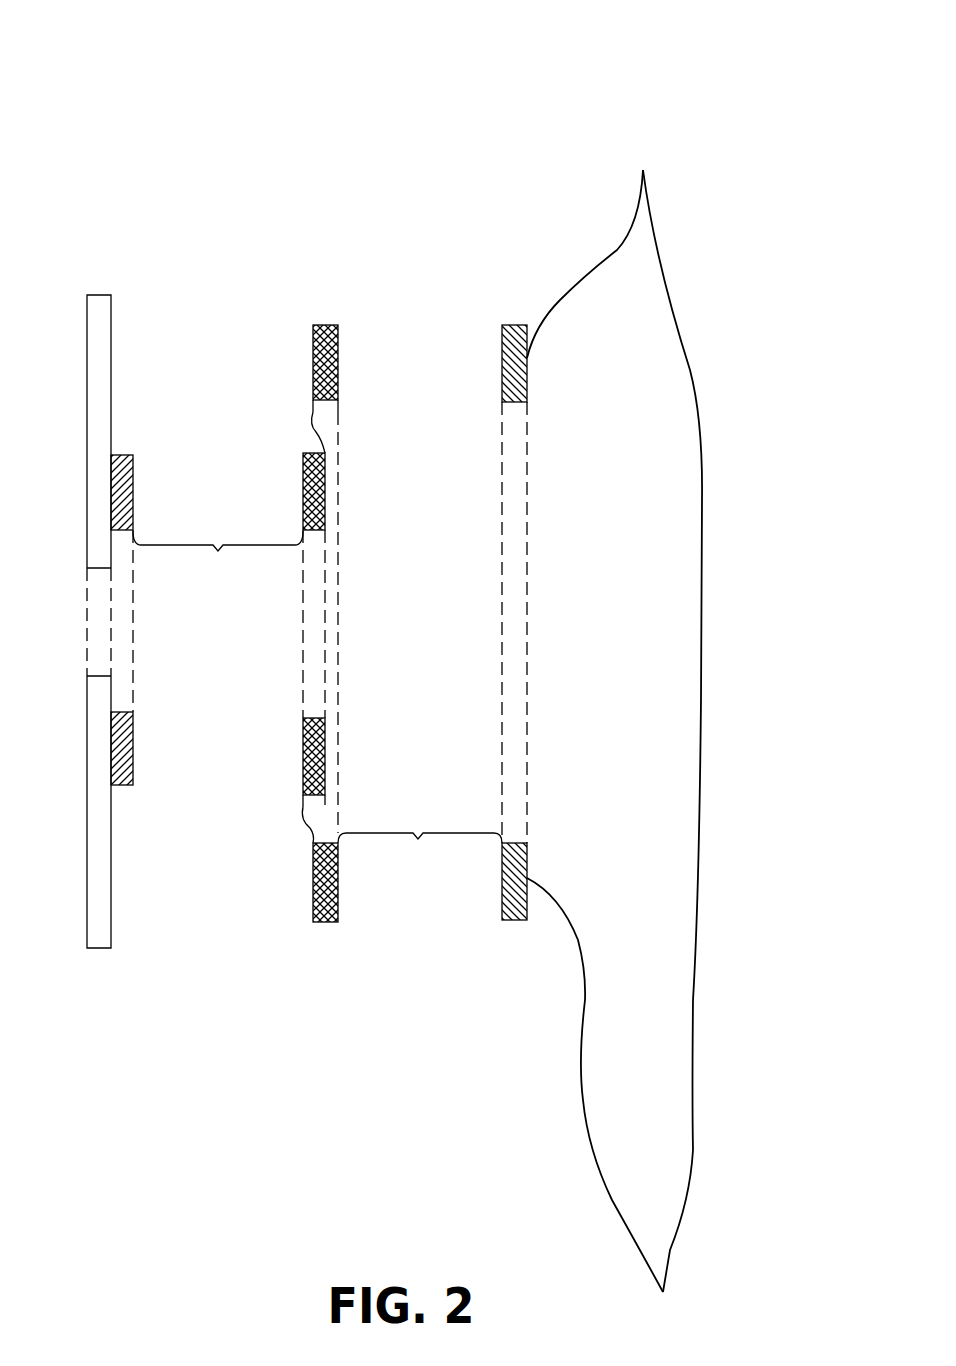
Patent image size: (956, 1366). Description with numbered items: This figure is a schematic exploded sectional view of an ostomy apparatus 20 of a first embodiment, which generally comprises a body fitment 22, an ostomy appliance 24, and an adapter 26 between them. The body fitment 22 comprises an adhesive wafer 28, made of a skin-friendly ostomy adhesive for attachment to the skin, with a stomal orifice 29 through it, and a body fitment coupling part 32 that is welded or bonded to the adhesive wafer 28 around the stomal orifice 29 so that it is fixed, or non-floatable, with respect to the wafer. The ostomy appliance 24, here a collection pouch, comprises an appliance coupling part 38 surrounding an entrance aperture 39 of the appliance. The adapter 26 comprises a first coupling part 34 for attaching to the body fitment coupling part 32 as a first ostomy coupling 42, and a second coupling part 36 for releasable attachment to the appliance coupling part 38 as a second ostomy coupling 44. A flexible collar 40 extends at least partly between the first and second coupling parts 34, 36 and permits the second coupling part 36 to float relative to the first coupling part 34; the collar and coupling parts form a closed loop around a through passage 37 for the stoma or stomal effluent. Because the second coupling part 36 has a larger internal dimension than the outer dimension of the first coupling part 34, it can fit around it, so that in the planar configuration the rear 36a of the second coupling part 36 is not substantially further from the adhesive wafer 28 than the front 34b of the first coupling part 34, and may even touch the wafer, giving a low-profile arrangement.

The ostomy apparatus 20 is at (318, 76).
The body fitment 22 is at (145, 216).
The ostomy appliance 24 is at (568, 216).
The adapter 26 is at (334, 216).
The adhesive wafer 28 is at (102, 322).
The stomal orifice 29 is at (89, 654).
The body fitment coupling part 32 is at (133, 470).
The first coupling part 34 is at (303, 495).
The front of the first coupling part 34b is at (327, 485).
The second coupling part 36 is at (338, 342).
The rear of the second coupling part 36a is at (313, 358).
The through passage 37 is at (318, 630).
The appliance coupling part 38 is at (502, 352).
The entrance aperture 39 is at (520, 458).
The flexible collar 40 is at (320, 440).
The first ostomy coupling 42 is at (218, 562).
The second ostomy coupling 44 is at (420, 815).